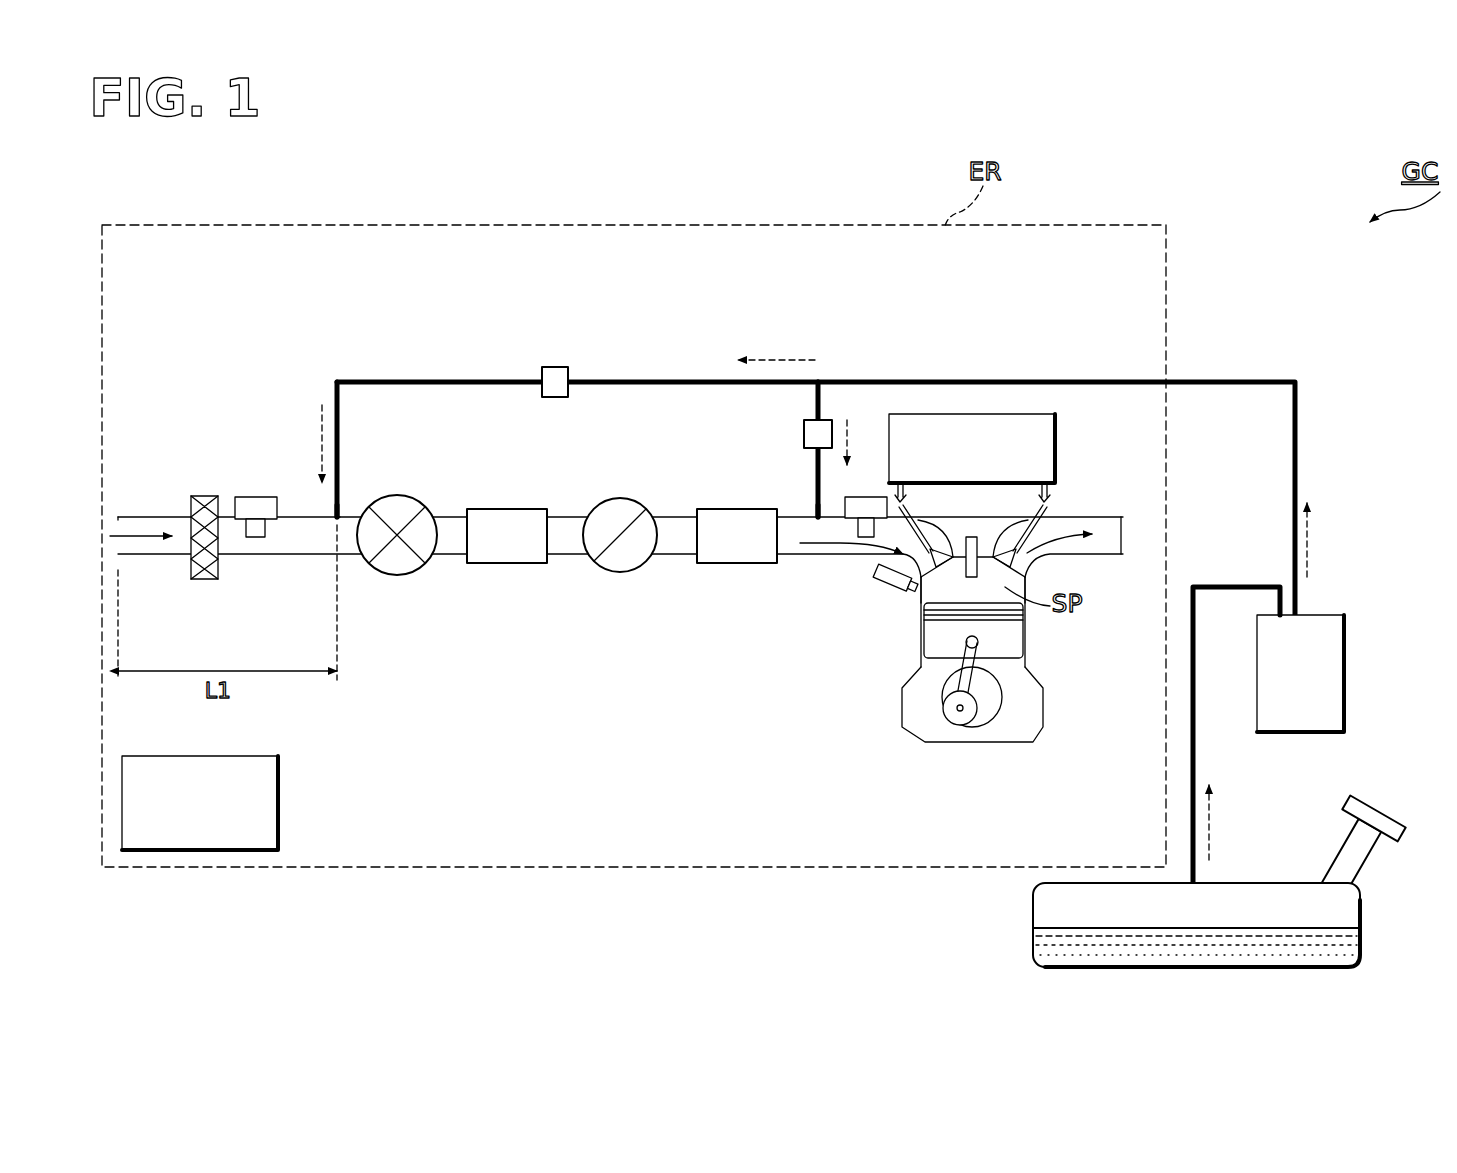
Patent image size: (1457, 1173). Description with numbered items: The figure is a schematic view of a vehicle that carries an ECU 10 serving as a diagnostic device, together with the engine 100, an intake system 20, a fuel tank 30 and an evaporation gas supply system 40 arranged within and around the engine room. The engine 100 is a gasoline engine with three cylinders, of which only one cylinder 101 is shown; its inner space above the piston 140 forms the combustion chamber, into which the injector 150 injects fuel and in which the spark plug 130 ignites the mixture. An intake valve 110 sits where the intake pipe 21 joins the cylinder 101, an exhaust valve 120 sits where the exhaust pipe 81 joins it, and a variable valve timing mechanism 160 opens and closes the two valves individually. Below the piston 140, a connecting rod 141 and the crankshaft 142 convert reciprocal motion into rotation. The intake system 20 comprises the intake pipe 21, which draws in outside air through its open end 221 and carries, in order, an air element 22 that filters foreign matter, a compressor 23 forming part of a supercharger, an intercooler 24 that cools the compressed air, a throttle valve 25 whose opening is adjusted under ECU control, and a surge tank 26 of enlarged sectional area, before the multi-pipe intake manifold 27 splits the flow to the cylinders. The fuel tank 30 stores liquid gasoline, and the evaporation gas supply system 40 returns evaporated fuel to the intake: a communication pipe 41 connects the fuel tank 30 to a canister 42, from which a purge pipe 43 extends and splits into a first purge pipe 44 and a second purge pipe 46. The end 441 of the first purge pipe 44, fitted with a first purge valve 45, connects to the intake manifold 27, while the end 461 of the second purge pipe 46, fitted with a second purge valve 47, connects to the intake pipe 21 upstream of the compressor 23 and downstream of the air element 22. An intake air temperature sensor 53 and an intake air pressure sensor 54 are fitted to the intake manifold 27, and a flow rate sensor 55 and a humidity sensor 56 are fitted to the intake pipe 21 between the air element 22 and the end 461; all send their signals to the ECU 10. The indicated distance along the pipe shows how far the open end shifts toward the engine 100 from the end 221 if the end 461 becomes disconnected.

The ECU 10 is at (278, 800).
The intake system 20 is at (487, 660).
The intake pipe 21 is at (140, 517).
The air element 22 is at (205, 580).
The compressor 23 is at (397, 575).
The intercooler 24 is at (510, 565).
The throttle valve 25 is at (620, 572).
The surge tank 26 is at (740, 565).
The intake manifold 27 is at (830, 558).
The fuel tank 30 is at (1360, 915).
The evaporation gas supply system 40 is at (1319, 719).
The communication pipe 41 is at (1198, 748).
The canister 42 is at (1345, 657).
The purge pipe 43 is at (1212, 380).
The first purge pipe 44 is at (815, 392).
The first purge valve 45 is at (803, 434).
The second purge pipe 46 is at (672, 380).
The second purge valve 47 is at (555, 367).
The intake air temperature sensor 53 is at (886, 423).
The intake air pressure sensor 54 is at (866, 497).
The flow rate sensor 55 is at (272, 477).
The humidity sensor 56 is at (255, 497).
The exhaust pipe 81 is at (1120, 554).
The engine 100 is at (915, 740).
The cylinder 101 is at (1027, 615).
The intake valve 110 is at (912, 520).
The exhaust valve 120 is at (1040, 515).
The spark plug 130 is at (975, 537).
The piston 140 is at (1027, 645).
The connecting rod 141 is at (970, 678).
The crankshaft 142 is at (1003, 702).
The injector 150 is at (893, 590).
The variable valve timing mechanism 160 is at (1005, 414).
The intake port 221 is at (118, 517).
The end of first purge pipe 441 is at (815, 515).
The end of second purge pipe 461 is at (340, 512).